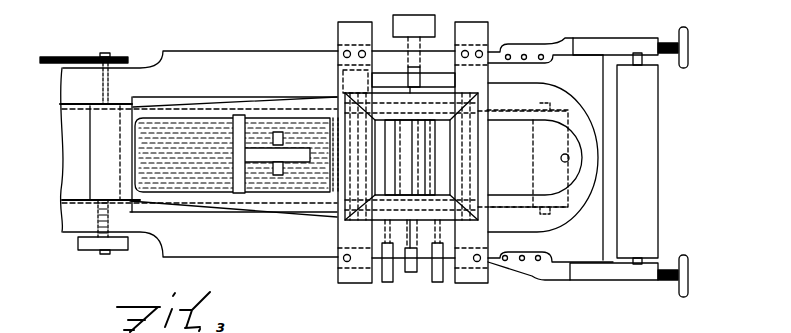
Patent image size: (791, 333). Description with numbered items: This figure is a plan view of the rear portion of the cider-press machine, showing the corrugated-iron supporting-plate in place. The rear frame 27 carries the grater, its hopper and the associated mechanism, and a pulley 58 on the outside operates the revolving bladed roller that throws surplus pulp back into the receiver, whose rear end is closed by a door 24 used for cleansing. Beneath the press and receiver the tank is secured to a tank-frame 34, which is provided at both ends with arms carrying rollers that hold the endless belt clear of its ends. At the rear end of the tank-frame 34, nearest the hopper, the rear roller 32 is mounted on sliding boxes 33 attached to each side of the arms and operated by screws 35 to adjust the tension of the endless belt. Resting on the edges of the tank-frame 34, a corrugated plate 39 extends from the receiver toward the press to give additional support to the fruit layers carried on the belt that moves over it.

The closed door 24 is at (527, 147).
The rear frame 27 is at (468, 46).
The rear roller 32 is at (648, 163).
The sliding boxes 33 is at (590, 45).
The tank-frame 34 is at (240, 62).
The screws 35 is at (675, 56).
The corrugated plate 39 is at (188, 130).
The pulley 58 is at (345, 80).